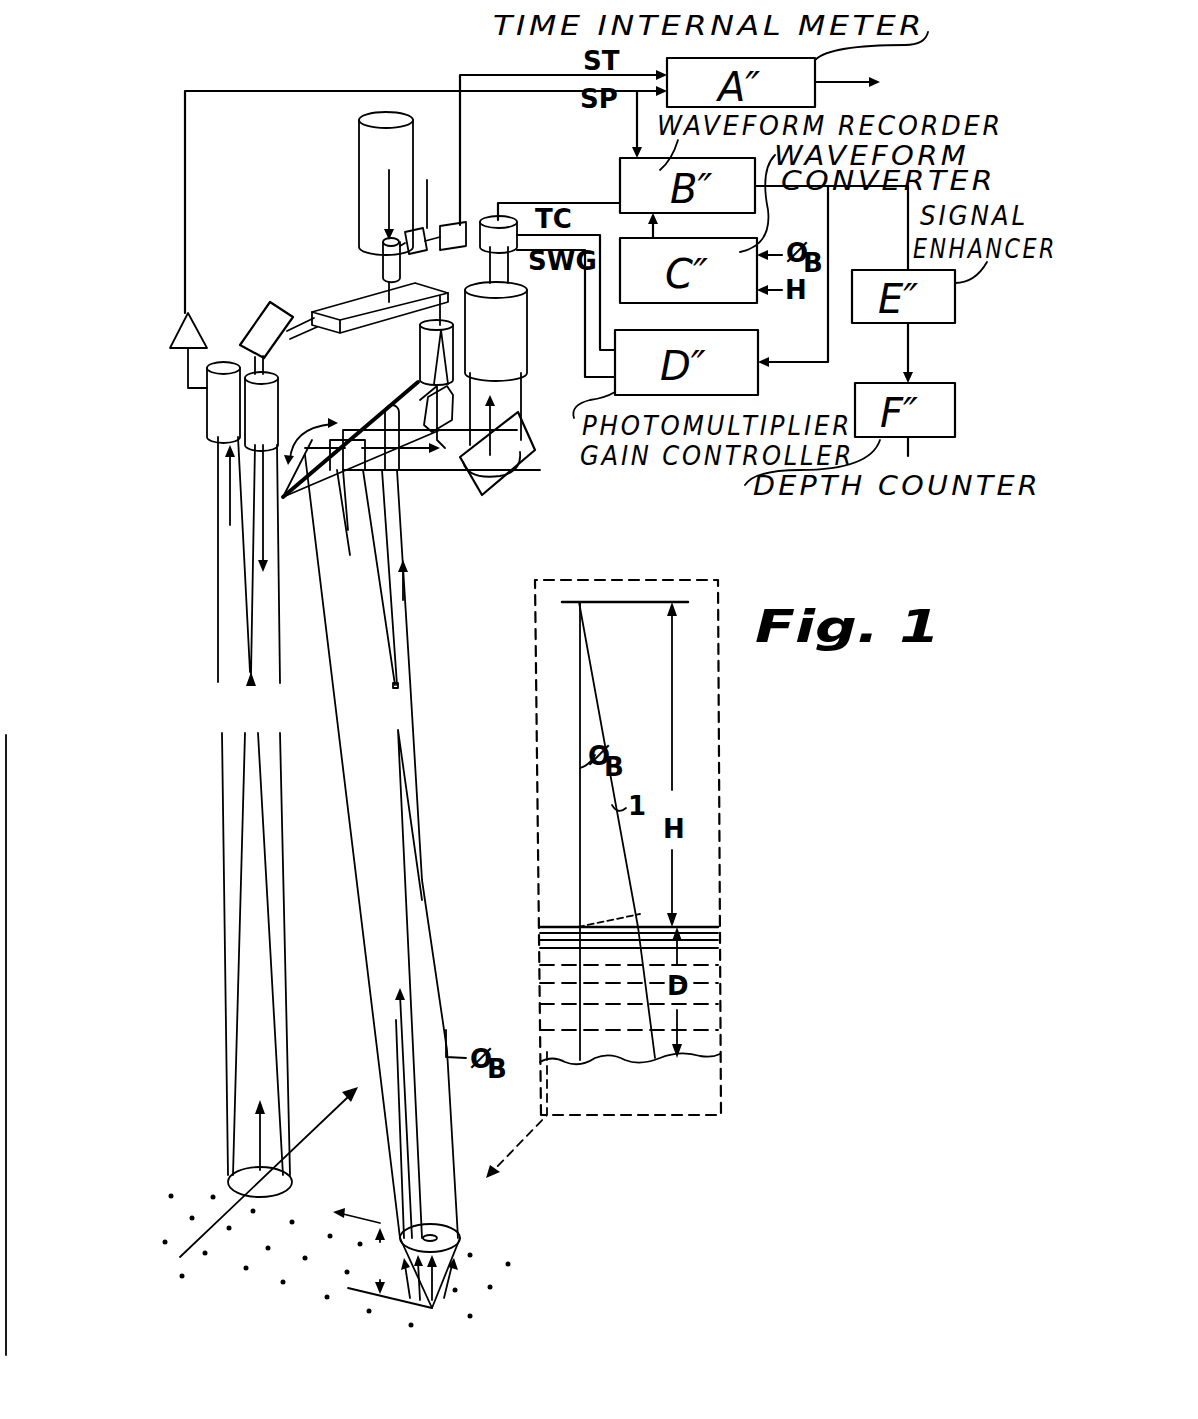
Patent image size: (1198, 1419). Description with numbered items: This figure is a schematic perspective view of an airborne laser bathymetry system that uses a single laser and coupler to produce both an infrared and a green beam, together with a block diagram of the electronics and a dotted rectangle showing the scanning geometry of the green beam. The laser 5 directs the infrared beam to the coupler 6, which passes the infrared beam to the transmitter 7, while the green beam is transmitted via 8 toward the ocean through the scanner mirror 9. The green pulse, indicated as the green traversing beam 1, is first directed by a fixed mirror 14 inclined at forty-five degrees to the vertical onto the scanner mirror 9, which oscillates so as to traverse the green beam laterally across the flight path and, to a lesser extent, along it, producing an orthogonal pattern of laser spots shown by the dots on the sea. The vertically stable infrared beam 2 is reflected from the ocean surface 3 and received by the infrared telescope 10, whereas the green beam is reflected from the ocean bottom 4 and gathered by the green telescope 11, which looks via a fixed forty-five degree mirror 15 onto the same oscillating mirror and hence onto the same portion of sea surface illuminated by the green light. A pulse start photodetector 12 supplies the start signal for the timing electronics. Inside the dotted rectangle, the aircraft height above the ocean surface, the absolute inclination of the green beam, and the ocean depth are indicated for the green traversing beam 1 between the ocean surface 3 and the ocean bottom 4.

The green traversing beam 1 is at (405, 612).
The infrared beam 2 is at (254, 806).
The ocean surface 3 is at (232, 1178).
The ocean bottom 4 is at (620, 1060).
The laser 5 is at (386, 183).
The coupler 6 is at (416, 284).
The transmitter 7 is at (278, 428).
The green beam transmission path 8 is at (420, 367).
The scanner mirror 9 is at (312, 496).
The infrared telescope 10 is at (207, 410).
The green telescope 11 is at (496, 330).
The pulse start photodetector 12 is at (447, 226).
The fixed mirror 14 is at (452, 400).
The fixed 45° mirror 15 is at (535, 450).